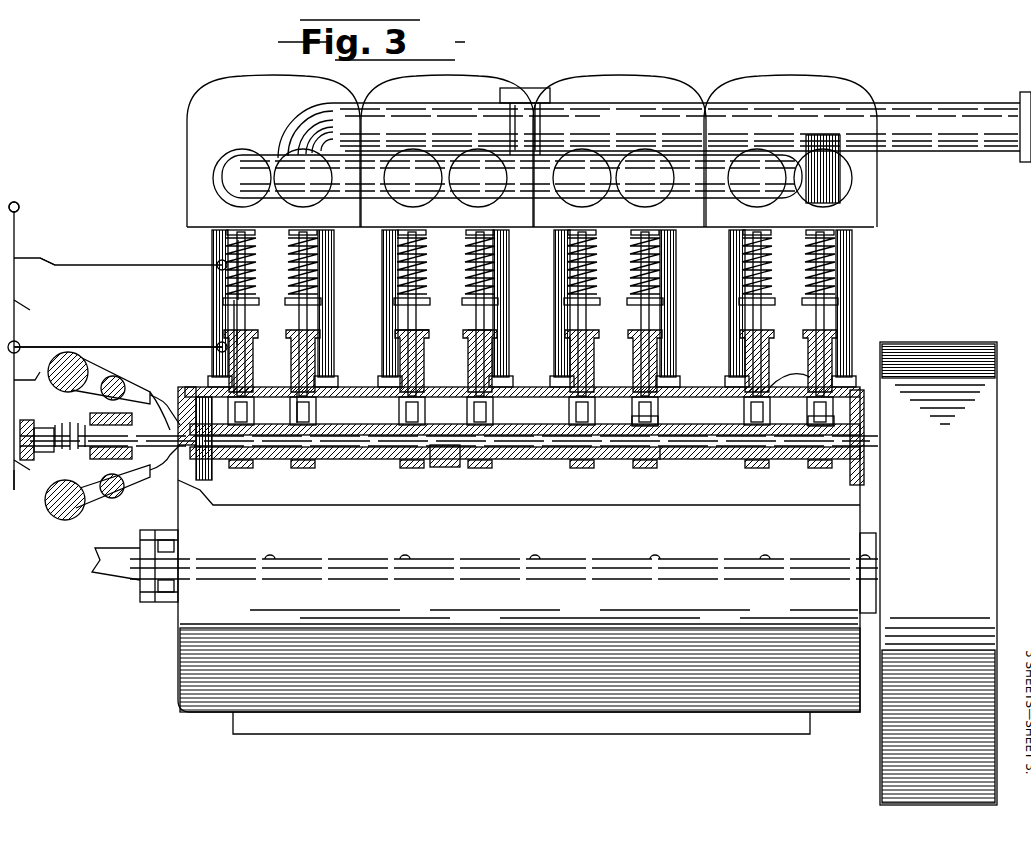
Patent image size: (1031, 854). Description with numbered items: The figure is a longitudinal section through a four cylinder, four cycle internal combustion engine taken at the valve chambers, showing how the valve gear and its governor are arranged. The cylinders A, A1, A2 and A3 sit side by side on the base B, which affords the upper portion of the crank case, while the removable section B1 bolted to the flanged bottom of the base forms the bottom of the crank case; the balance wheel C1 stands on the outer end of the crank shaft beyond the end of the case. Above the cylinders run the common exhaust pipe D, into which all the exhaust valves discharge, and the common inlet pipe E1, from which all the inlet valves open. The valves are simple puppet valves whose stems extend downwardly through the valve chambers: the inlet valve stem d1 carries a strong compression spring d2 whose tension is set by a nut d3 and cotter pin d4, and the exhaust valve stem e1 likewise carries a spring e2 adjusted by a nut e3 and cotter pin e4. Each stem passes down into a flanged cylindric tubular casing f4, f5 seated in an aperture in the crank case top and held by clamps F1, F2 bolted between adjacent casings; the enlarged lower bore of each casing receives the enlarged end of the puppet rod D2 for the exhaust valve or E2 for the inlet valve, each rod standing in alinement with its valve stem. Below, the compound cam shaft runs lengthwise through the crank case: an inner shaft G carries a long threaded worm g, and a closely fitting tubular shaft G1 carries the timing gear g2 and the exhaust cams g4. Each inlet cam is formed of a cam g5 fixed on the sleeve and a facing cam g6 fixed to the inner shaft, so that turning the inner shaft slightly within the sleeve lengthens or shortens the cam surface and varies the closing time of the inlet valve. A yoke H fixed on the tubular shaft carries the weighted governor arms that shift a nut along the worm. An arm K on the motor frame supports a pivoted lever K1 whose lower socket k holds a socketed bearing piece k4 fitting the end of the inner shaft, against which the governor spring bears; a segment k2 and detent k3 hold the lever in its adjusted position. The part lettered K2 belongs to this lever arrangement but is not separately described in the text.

The cylinder A is at (222, 85).
The cylinder A1 is at (510, 80).
The cylinder A2 is at (660, 80).
The cylinder A3 is at (830, 86).
The exhaust pipe D is at (920, 112).
The inlet pipe E1 is at (250, 178).
The exhaust valve stem e1 is at (492, 310).
The compression spring e2 is at (318, 266).
The nut e3 is at (830, 305).
The cotter pin e4 is at (320, 306).
The inlet valve stem d1 is at (420, 322).
The compression spring d2 is at (234, 300).
The nut d3 is at (750, 300).
The cotter pin d4 is at (237, 310).
The puppet rod D2 is at (432, 352).
The clamp F1 is at (810, 377).
The clamp F2 is at (497, 352).
The puppet rod E2 is at (318, 398).
The tubular casing f4 is at (215, 345).
The tubular casing f5 is at (310, 352).
The inner shaft G is at (705, 447).
The tubular shaft G1 is at (672, 450).
The worm g is at (80, 415).
The timing gear g2 is at (160, 395).
The exhaust cam g4 is at (447, 467).
The inlet cam g5 is at (660, 421).
The inlet cam g6 is at (810, 421).
The base B is at (855, 505).
The removable section B1 is at (835, 738).
The balance wheel C1 is at (912, 352).
The arm K is at (80, 342).
The lever K1 is at (20, 320).
The governor link K2 is at (15, 470).
The socket k is at (14, 492).
The segment k2 is at (30, 256).
The detent k3 is at (22, 222).
The socketed bearing piece k4 is at (48, 375).
The yoke H is at (128, 500).